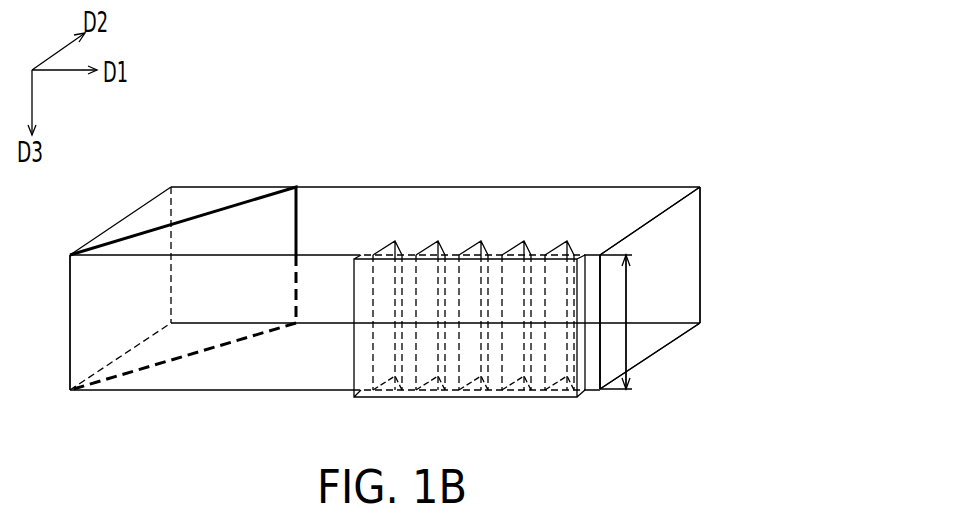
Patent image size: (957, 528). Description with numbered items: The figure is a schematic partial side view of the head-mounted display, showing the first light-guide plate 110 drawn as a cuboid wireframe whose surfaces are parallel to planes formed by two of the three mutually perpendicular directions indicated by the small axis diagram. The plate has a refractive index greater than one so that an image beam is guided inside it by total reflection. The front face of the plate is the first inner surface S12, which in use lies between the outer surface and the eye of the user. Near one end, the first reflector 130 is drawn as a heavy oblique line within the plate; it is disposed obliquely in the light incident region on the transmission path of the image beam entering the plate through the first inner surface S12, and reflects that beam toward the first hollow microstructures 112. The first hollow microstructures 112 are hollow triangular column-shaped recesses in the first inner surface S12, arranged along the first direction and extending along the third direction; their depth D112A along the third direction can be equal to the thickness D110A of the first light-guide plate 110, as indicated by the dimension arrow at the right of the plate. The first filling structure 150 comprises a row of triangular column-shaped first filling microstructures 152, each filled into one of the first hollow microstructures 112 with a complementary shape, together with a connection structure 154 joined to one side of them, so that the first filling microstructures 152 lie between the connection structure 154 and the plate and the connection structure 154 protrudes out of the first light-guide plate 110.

The first light-guide plate 110 is at (633, 203).
The first hollow microstructures 112 is at (573, 249).
The first reflector 130 is at (219, 211).
The first filling structure 150 is at (592, 135).
The first filling microstructures 152 is at (554, 253).
The connection structure 154 is at (540, 253).
The first inner surface S12 is at (292, 363).
The depth of the first hollow microstructures D112A is at (651, 322).
The thickness of the first light-guide plate D110A is at (699, 322).